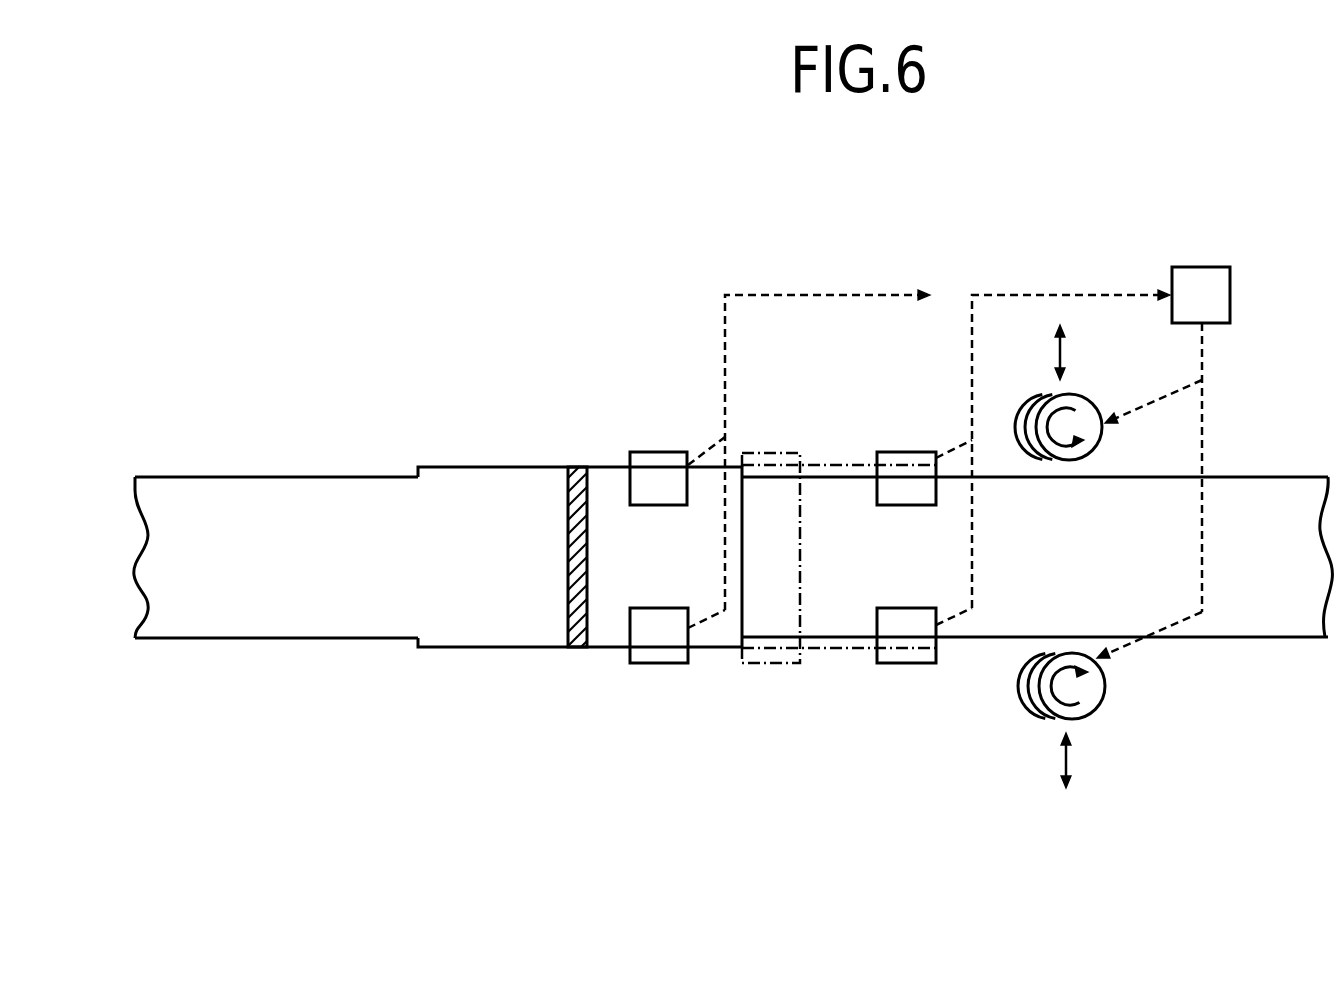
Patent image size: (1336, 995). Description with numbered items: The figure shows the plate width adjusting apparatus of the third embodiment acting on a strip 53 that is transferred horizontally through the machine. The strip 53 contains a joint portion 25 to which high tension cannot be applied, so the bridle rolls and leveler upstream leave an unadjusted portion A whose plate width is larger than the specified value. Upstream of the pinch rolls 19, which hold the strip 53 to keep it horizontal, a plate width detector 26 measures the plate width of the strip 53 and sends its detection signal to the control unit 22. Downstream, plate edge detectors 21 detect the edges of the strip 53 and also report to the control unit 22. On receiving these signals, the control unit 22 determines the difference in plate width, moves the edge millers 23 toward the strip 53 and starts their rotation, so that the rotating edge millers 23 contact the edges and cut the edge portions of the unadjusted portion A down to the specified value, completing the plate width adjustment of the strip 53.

The strip 53 is at (225, 512).
The unadjusted portion A is at (527, 465).
The joint portion 25 is at (566, 573).
The plate width detector 26 is at (657, 452).
The pinch rolls 19 is at (780, 664).
The plate edge detectors 21 is at (905, 452).
The control unit 22 is at (1232, 303).
The edge millers 23 is at (1090, 457).